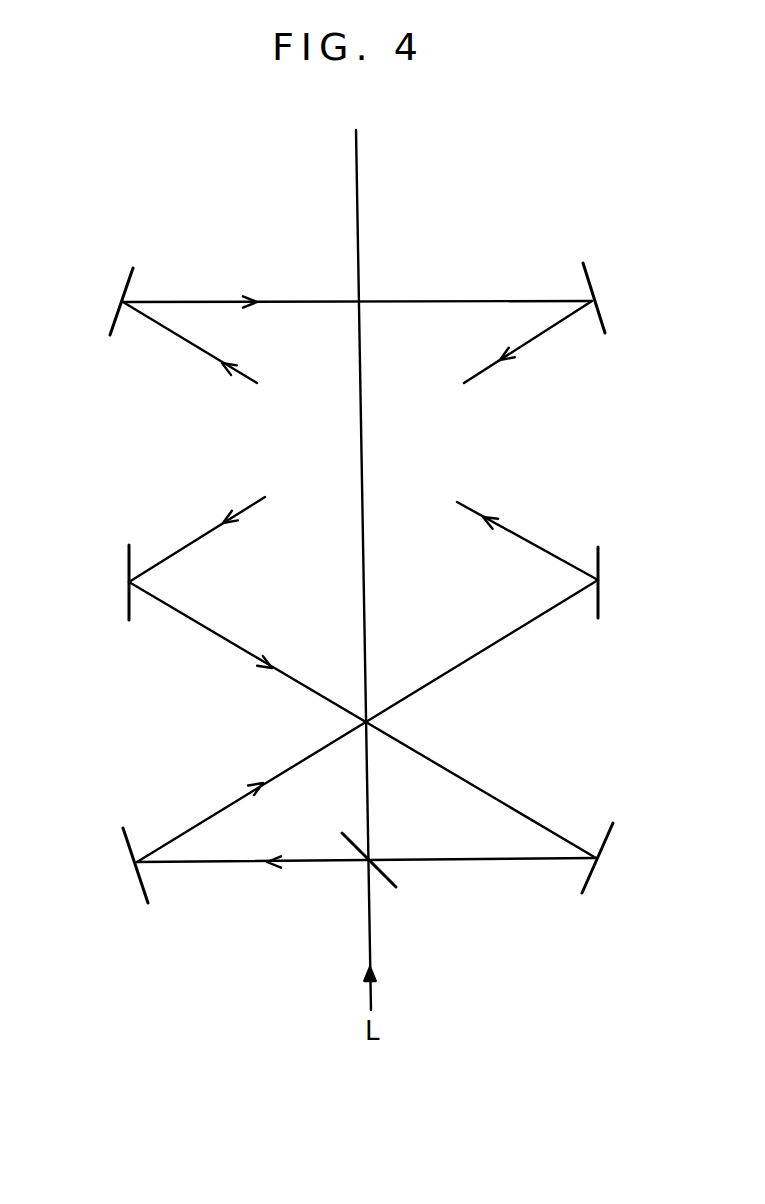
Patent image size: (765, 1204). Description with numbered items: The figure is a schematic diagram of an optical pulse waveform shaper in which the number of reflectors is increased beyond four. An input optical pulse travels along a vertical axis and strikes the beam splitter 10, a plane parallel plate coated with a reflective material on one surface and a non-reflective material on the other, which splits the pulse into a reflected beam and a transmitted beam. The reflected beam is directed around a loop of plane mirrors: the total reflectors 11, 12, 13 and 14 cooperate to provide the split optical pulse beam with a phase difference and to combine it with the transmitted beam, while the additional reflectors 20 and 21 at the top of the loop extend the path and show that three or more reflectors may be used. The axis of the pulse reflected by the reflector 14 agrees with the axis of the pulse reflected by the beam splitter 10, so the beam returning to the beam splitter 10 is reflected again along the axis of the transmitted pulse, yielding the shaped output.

The beam splitter 10 is at (392, 877).
The total reflector 11 is at (135, 870).
The total reflector 12 is at (600, 567).
The total reflector 13 is at (128, 587).
The total reflector 14 is at (602, 848).
The reflector 20 is at (118, 312).
The reflector 21 is at (597, 282).